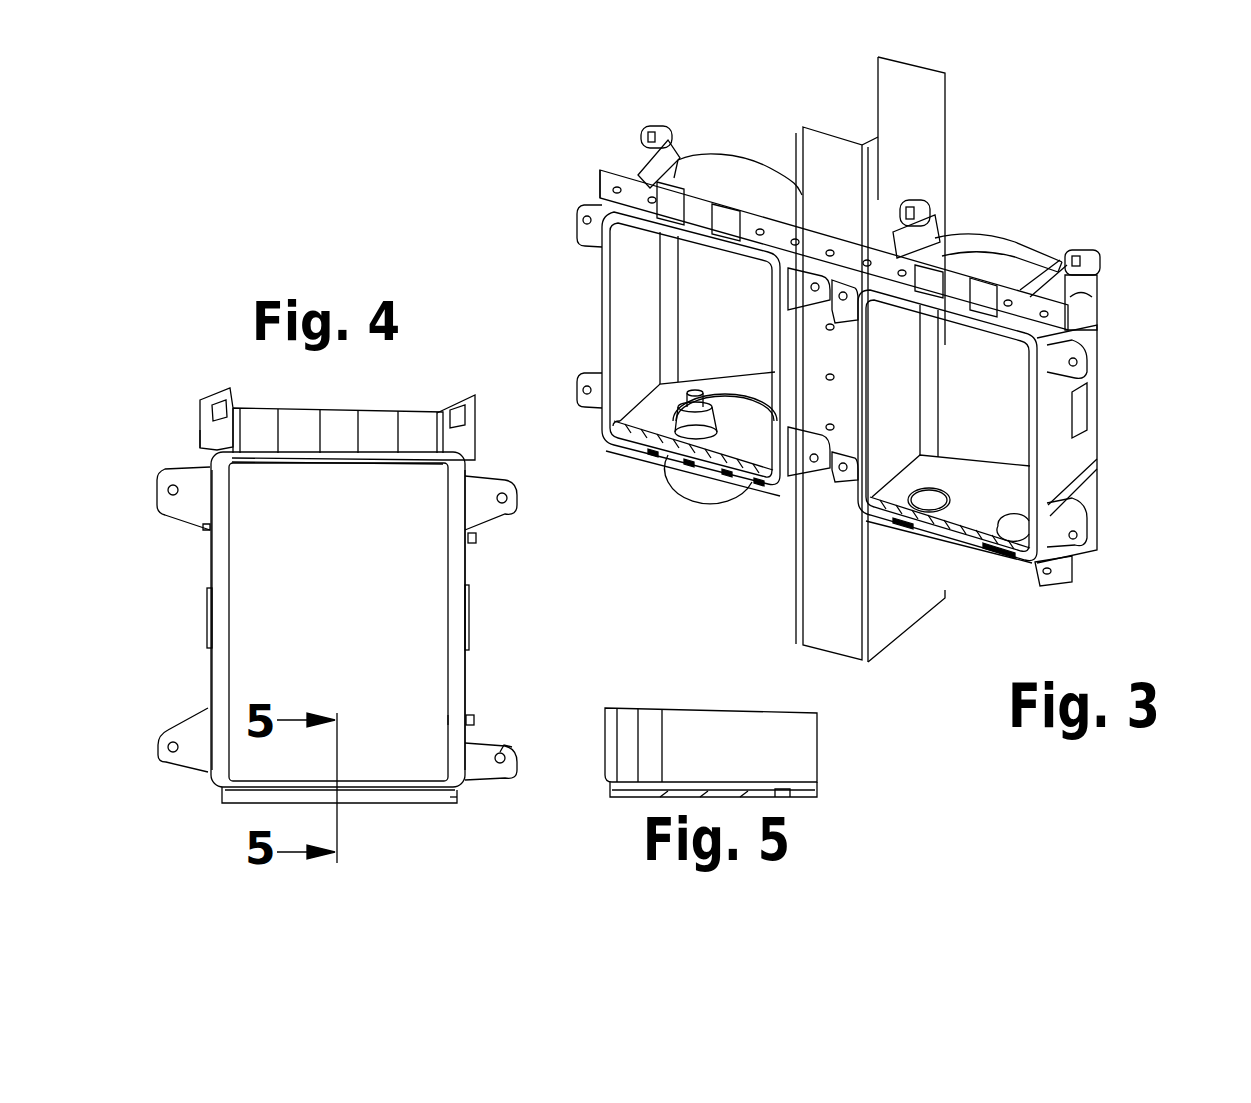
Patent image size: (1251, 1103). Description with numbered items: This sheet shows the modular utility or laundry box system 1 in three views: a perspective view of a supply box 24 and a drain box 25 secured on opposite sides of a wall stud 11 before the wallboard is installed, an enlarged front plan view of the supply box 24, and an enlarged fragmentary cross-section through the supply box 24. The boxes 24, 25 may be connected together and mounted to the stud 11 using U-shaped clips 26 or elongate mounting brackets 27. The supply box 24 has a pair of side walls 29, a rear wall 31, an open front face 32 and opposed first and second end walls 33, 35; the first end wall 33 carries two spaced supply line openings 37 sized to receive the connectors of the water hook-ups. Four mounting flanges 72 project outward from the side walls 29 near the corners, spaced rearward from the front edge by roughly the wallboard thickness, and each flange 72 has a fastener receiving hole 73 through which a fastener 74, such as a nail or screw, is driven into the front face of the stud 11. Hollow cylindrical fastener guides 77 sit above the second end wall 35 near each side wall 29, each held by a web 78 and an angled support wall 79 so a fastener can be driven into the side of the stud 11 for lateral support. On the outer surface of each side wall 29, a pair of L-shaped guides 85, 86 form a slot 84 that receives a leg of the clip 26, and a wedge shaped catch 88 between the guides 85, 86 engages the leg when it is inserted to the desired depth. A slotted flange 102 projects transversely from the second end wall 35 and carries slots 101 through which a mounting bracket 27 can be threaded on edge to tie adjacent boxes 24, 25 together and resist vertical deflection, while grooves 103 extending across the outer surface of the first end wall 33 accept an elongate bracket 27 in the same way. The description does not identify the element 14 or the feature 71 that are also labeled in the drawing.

In FIG. 3, the modular utility box system 1 is at (1157, 178).
In FIG. 3, the wall stud 11 is at (913, 138).
In FIG. 3, the electrical box 14 is at (562, 270).
In FIG. 3, the supply box 24 is at (1017, 240).
In FIG. 4, the supply box 24 is at (152, 660).
In FIG. 5, the supply box 24 is at (707, 683).
In FIG. 3, the drain box 25 is at (753, 165).
In FIG. 3, the U-shaped clip 26 is at (832, 355).
In FIG. 3, the elongate bracket 27 is at (600, 170).
In FIG. 4, the side wall 29 is at (210, 562).
In FIG. 4, the rear wall 31 is at (362, 611).
In FIG. 3, the open front side 32 is at (1040, 412).
In FIG. 4, the first end wall 33 is at (398, 803).
In FIG. 5, the first end wall 33 is at (700, 795).
In FIG. 3, the second end wall 35 is at (973, 247).
In FIG. 4, the second end wall 35 is at (418, 453).
In FIG. 3, the supply line opening 37 is at (940, 500).
In FIG. 3, the rail 71 is at (642, 447).
In FIG. 4, the rail 71 is at (260, 458).
In FIG. 5, the rail 71 is at (817, 787).
In FIG. 3, the mounting flange 72 is at (580, 203).
In FIG. 4, the mounting flange 72 is at (163, 473).
In FIG. 4, the fastener receiving hole 73 is at (200, 530).
In FIG. 3, the fastener 74 is at (813, 462).
In FIG. 3, the fastener guide 77 is at (647, 125).
In FIG. 4, the fastener guide 77 is at (200, 400).
In FIG. 3, the web 78 is at (1080, 283).
In FIG. 4, the web 78 is at (217, 438).
In FIG. 3, the support wall 79 is at (667, 160).
In FIG. 4, the slot 84 is at (470, 717).
In FIG. 4, the L-shaped guide 85 is at (463, 722).
In FIG. 4, the L-shaped guide 86 is at (475, 535).
In FIG. 4, the wedge shaped catch 88 is at (207, 617).
In FIG. 4, the slot 101 is at (358, 458).
In FIG. 3, the slotted flange 102 is at (658, 206).
In FIG. 4, the slotted flange 102 is at (260, 410).
In FIG. 5, the groove 103 is at (790, 799).